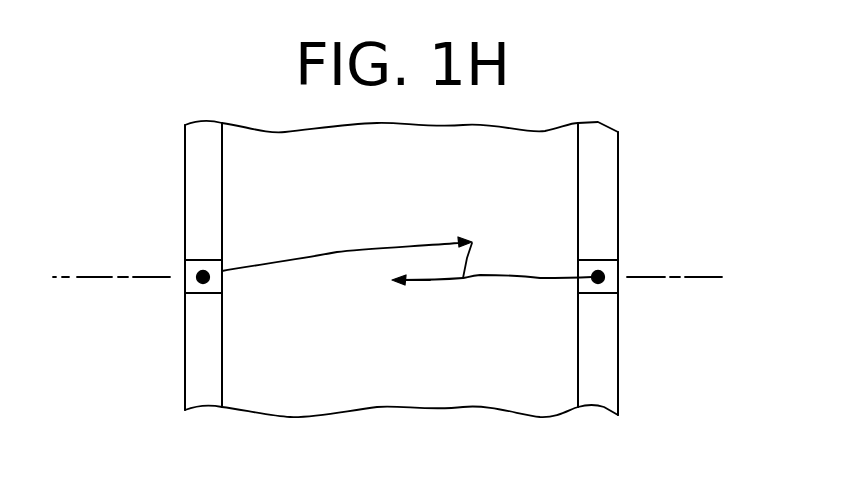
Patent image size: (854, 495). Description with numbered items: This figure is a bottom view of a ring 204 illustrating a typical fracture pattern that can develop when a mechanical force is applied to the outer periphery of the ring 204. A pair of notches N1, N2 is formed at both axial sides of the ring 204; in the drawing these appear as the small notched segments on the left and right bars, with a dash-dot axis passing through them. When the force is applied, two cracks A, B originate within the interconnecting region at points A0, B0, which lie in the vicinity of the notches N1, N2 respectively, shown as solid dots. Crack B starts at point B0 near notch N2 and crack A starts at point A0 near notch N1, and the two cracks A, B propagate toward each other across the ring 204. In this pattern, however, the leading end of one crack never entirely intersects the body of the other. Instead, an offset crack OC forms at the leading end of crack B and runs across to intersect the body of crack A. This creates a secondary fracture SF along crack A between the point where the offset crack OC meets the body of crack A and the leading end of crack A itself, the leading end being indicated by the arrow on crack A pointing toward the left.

The ring 204 is at (627, 147).
The crack origination point B0 is at (198, 274).
The notch N2 is at (190, 287).
The crack origination point A0 is at (604, 275).
The notch N1 is at (610, 287).
The crack B is at (347, 247).
The crack A is at (492, 294).
The offset crack OC is at (470, 259).
The secondary fracture SF is at (432, 283).